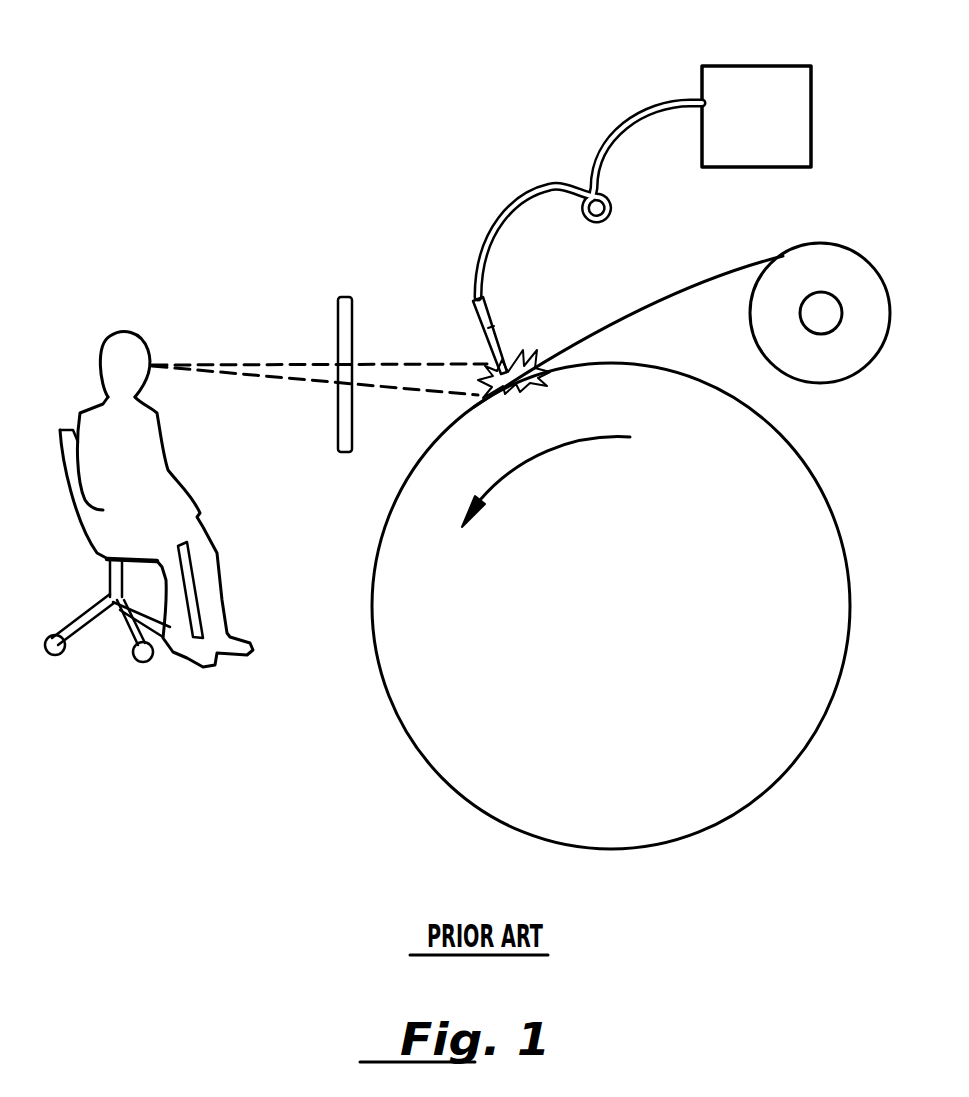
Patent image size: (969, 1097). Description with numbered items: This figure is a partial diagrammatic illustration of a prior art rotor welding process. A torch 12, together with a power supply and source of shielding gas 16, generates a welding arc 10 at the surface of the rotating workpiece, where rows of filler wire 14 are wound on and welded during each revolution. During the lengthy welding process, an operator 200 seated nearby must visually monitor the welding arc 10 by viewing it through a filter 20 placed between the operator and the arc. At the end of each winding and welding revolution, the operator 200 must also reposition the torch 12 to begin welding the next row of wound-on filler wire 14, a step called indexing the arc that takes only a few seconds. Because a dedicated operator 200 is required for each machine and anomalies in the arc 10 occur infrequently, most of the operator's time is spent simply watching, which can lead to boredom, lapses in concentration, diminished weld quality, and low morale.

The welding arc 10 is at (478, 378).
The torch 12 is at (493, 318).
The wound-on filler wire 14 is at (668, 290).
The power supply and source of shielding gas 16 is at (737, 85).
The filter 20 is at (338, 318).
The operator 200 is at (203, 663).